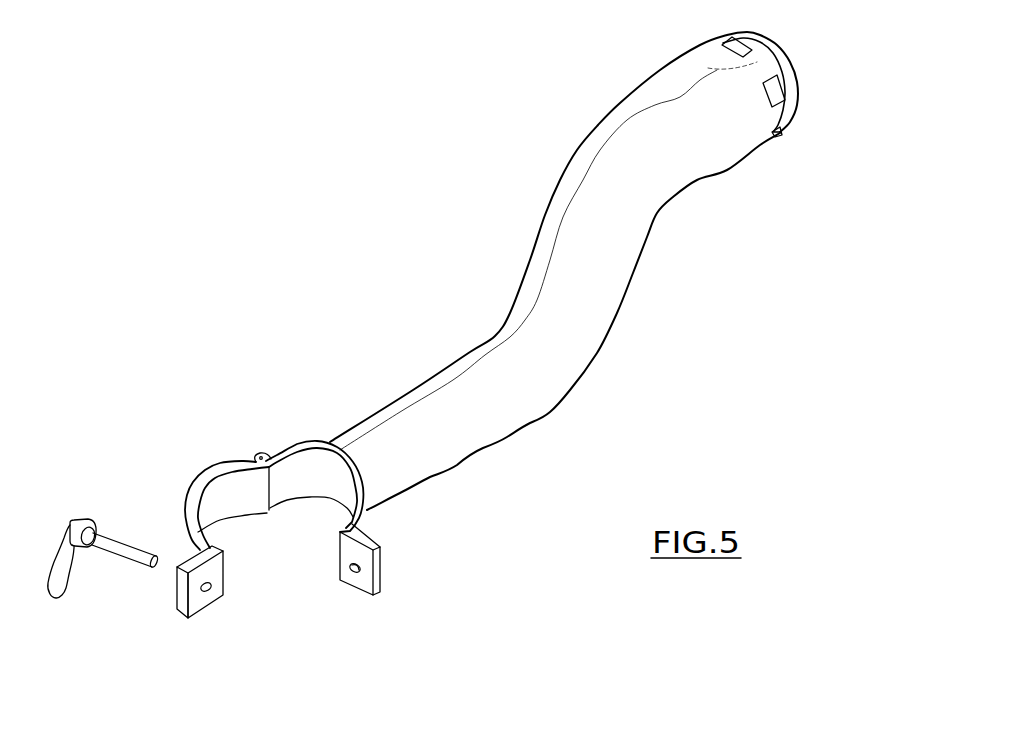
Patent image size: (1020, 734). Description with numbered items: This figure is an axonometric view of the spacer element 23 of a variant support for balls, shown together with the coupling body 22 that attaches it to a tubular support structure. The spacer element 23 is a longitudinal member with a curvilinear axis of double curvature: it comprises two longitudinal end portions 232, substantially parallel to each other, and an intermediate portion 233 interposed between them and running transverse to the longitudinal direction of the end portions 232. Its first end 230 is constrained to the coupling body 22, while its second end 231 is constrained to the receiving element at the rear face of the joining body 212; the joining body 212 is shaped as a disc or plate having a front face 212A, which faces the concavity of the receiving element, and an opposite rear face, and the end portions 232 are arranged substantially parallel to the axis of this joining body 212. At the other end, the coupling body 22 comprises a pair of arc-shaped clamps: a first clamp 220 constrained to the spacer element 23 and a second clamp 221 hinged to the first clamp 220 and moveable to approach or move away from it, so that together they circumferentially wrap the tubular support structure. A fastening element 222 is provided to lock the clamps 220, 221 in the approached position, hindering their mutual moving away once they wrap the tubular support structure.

The coupling body 22 is at (214, 444).
The spacer element 23 is at (607, 288).
The joining body 212 is at (752, 65).
The front face 212A is at (778, 67).
The first clamp 220 is at (253, 497).
The second clamp 221 is at (237, 462).
The fastening element 222 is at (103, 520).
The first end 230 is at (378, 487).
The second end 231 is at (765, 127).
The longitudinal end portions 232 is at (778, 135).
The intermediate portion 233 is at (593, 252).